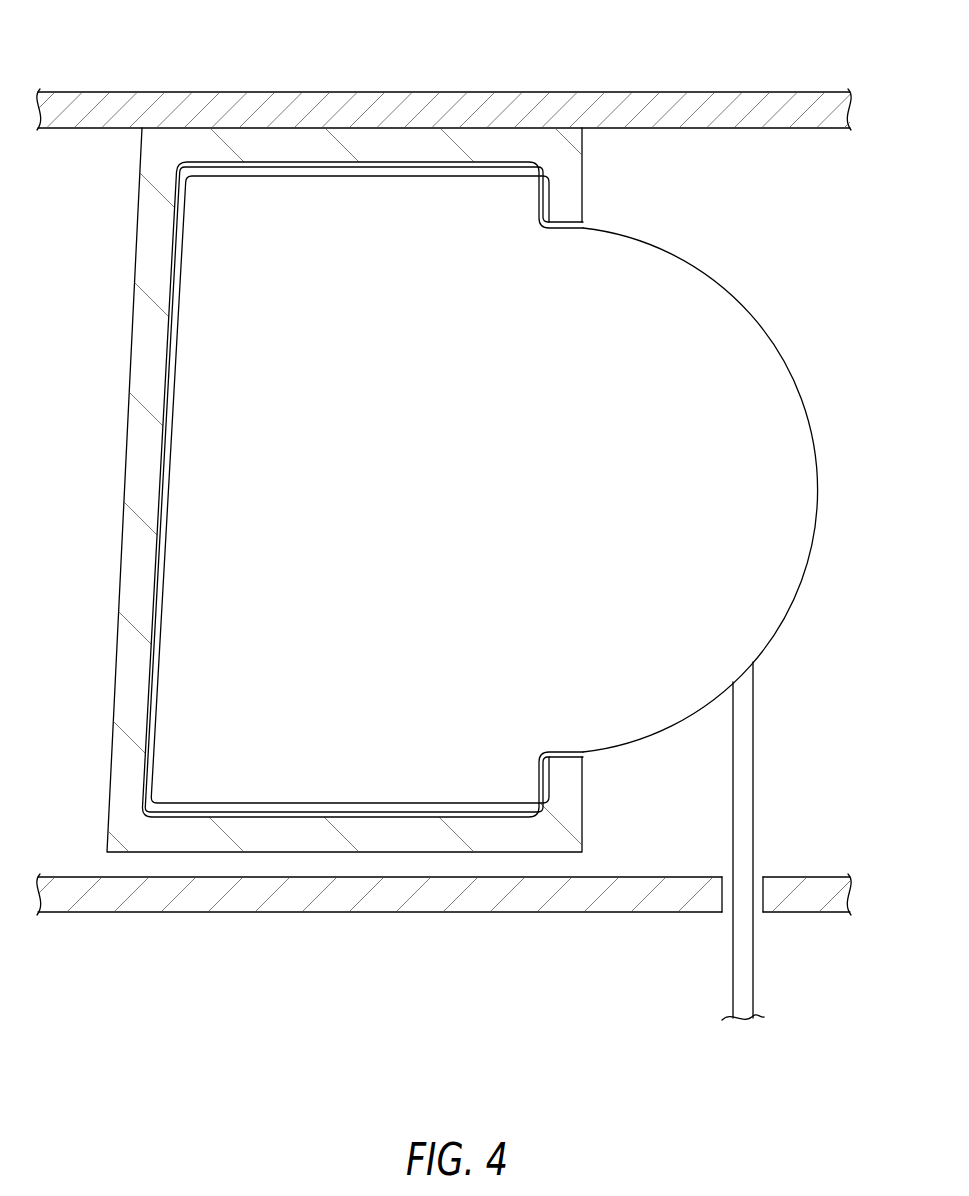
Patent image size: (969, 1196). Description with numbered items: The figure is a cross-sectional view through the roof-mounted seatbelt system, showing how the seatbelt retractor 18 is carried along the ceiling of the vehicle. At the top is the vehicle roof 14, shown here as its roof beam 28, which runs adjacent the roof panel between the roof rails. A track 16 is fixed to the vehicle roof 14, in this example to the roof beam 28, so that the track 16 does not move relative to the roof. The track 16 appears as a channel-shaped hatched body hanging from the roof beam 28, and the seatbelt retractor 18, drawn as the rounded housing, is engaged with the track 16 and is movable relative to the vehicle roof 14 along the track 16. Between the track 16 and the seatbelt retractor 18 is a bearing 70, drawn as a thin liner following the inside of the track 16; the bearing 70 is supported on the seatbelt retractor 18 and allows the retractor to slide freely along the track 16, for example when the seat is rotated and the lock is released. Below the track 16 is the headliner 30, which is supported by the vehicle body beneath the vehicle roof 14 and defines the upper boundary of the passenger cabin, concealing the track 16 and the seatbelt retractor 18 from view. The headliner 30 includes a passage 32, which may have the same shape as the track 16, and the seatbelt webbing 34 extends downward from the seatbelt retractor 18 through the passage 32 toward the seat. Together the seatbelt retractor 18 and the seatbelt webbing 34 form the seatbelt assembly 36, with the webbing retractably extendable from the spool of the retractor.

The vehicle roof 14 is at (216, 84).
The track 16 is at (136, 273).
The seatbelt retractor 18 is at (737, 490).
The roof beam 28 is at (464, 91).
The headliner 30 is at (292, 913).
The passage 32 is at (726, 903).
The seatbelt webbing 34 is at (753, 967).
The seatbelt assembly 36 is at (807, 608).
The bearing 70 is at (288, 173).